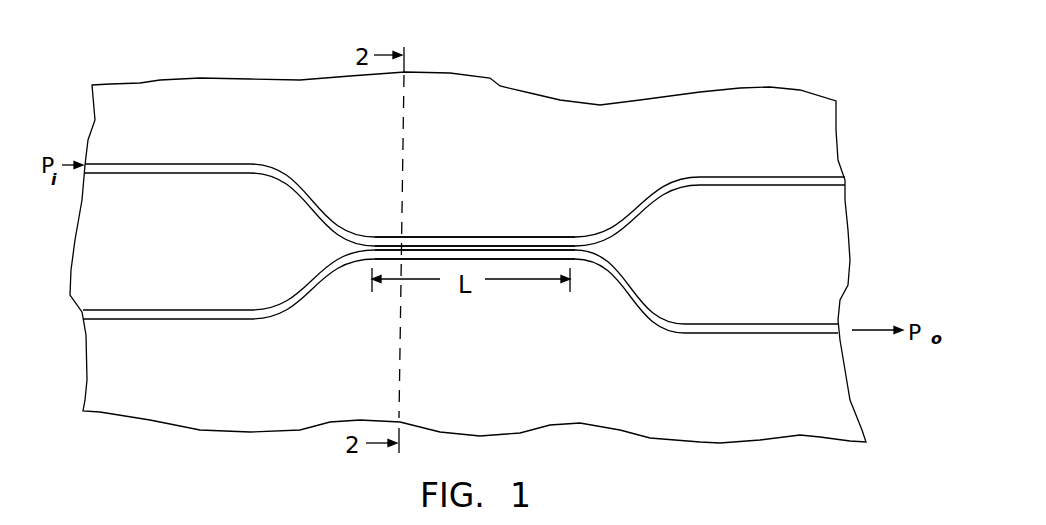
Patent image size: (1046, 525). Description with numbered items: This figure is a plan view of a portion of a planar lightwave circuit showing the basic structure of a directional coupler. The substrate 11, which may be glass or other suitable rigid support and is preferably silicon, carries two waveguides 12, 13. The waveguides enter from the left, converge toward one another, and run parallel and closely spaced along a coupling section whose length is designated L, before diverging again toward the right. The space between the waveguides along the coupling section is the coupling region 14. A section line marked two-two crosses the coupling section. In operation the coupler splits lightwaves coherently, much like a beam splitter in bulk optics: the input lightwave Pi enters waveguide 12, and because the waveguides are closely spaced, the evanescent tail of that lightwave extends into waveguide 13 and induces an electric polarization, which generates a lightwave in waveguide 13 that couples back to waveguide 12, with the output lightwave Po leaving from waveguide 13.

The substrate 11 is at (647, 103).
The waveguide 12 is at (243, 170).
The waveguide 13 is at (228, 318).
The coupling region 14 is at (475, 247).